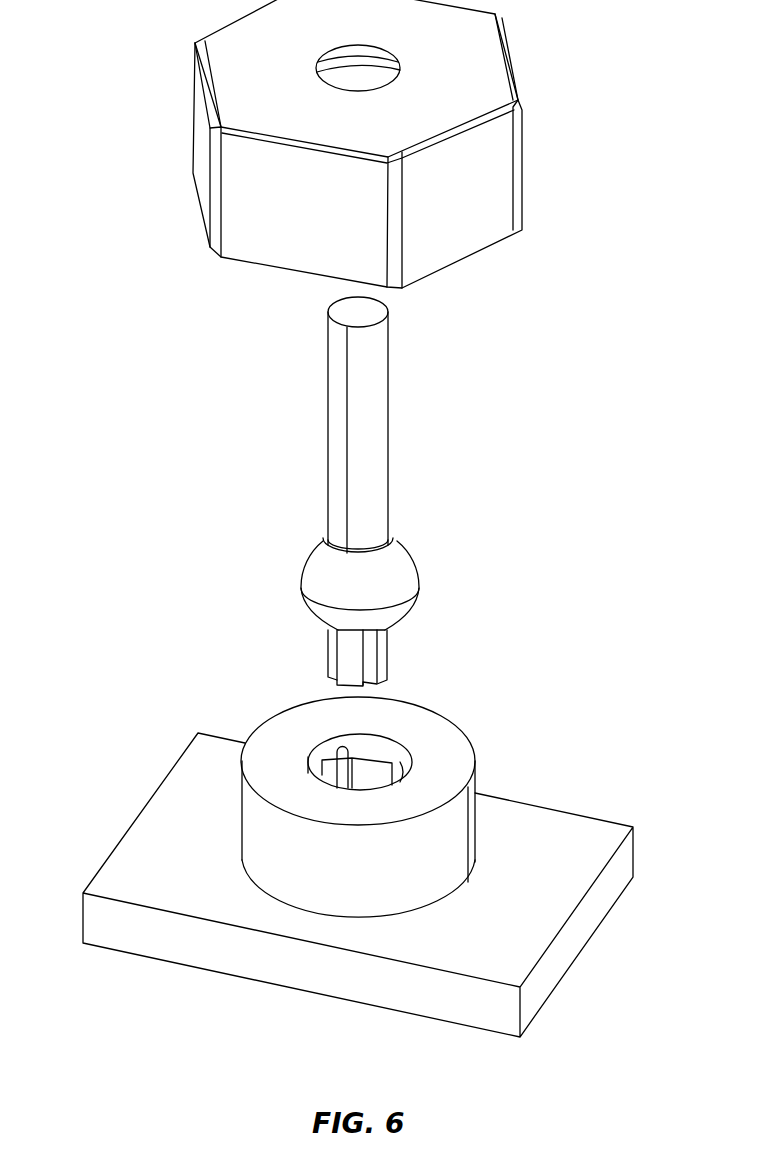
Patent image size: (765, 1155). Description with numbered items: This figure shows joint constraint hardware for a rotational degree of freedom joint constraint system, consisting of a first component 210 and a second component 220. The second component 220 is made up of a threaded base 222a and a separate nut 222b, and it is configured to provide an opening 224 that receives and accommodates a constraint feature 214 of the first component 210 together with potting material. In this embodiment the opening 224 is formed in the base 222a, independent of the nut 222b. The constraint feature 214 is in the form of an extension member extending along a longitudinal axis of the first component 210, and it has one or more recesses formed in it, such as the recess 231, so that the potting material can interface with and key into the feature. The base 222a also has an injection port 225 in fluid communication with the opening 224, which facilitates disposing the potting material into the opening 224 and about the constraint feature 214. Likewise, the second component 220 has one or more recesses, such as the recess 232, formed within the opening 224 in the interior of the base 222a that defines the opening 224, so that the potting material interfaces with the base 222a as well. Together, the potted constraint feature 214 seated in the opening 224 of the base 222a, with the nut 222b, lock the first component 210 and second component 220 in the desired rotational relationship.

The first component 210 is at (264, 418).
The constraint feature 214 is at (330, 648).
The second component 220 is at (476, 725).
The threaded base 222a is at (243, 827).
The nut 222b is at (193, 115).
The opening 224 is at (373, 770).
The injection port 225 is at (407, 897).
The recess 231 is at (368, 648).
The recess 232 is at (345, 763).